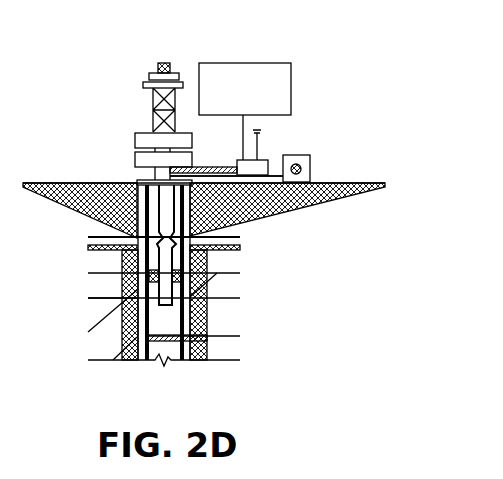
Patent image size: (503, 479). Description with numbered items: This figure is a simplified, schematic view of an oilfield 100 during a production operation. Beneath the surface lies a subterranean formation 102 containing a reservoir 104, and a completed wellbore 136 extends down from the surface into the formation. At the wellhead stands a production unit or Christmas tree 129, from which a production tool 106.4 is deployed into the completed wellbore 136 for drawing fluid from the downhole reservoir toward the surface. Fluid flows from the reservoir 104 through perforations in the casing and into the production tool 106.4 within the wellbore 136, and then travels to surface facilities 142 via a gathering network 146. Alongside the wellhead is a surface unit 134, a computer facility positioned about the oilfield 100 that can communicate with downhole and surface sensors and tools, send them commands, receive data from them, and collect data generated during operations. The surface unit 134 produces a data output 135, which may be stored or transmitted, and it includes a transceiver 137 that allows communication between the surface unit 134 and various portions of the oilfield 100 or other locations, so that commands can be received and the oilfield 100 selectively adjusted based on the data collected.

The oilfield 100 is at (204, 202).
The subterranean formation 102 is at (254, 283).
The reservoir 104 is at (240, 328).
The production tool 106.4 is at (130, 298).
The Christmas tree 129 is at (163, 63).
The surface unit 134 is at (237, 162).
The data output 135 is at (263, 63).
The completed wellbore 136 is at (186, 214).
The transceiver 137 is at (258, 147).
The surface facilities 142 is at (310, 168).
The gathering network 146 is at (274, 187).